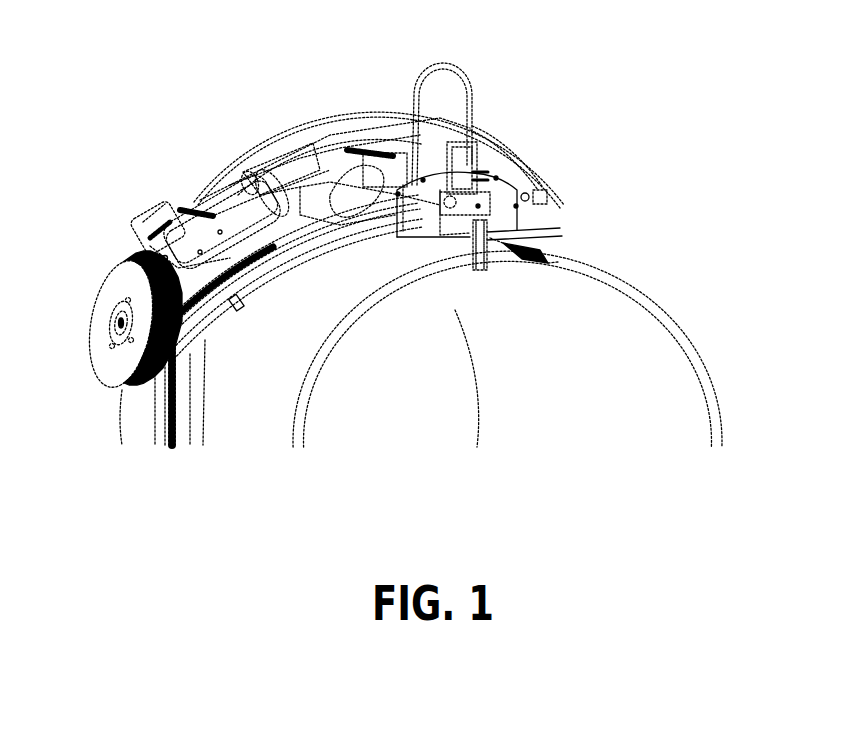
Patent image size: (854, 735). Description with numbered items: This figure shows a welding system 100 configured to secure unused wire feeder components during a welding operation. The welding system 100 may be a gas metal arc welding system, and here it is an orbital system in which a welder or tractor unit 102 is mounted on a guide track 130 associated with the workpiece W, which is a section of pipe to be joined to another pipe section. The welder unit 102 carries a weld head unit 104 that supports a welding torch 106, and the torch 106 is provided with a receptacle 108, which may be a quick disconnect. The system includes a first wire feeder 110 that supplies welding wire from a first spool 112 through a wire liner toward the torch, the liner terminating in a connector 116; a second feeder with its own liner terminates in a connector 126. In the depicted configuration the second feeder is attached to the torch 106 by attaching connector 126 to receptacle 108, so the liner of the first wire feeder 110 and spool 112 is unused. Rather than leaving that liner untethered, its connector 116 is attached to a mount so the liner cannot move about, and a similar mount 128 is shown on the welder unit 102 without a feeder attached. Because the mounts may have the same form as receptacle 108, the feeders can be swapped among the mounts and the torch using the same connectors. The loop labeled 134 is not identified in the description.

The welding system 100 is at (652, 30).
The welder unit 102 is at (297, 157).
The weld head unit 104 is at (396, 234).
The welding torch 106 is at (489, 221).
The receptacle 108 is at (492, 179).
The first wire feeder 110 is at (197, 197).
The first spool 112 is at (108, 282).
The connector 116 is at (538, 197).
The connector 126 is at (479, 166).
The mount 128 is at (340, 223).
The guide track 130 is at (217, 323).
The cable loop 134 is at (332, 207).
The workpiece W is at (667, 327).